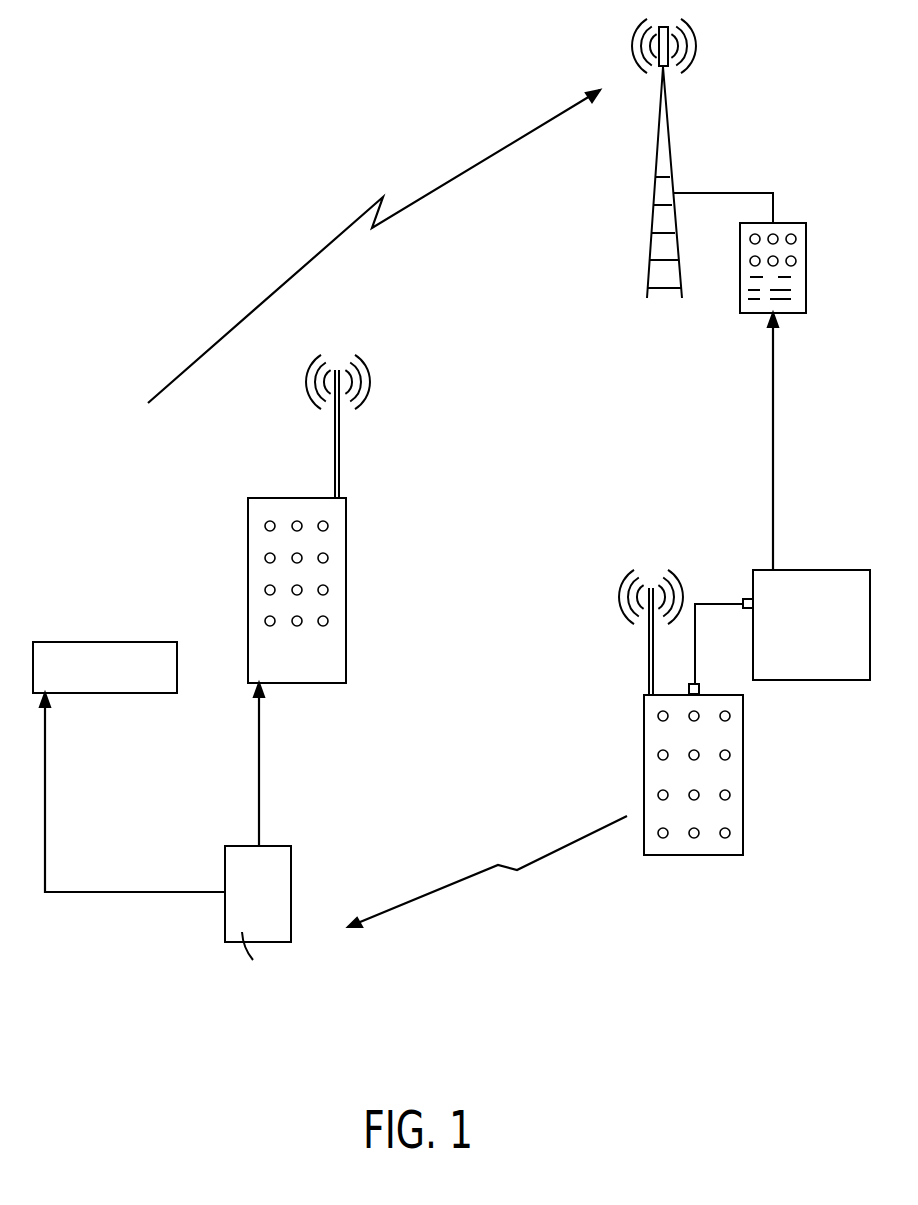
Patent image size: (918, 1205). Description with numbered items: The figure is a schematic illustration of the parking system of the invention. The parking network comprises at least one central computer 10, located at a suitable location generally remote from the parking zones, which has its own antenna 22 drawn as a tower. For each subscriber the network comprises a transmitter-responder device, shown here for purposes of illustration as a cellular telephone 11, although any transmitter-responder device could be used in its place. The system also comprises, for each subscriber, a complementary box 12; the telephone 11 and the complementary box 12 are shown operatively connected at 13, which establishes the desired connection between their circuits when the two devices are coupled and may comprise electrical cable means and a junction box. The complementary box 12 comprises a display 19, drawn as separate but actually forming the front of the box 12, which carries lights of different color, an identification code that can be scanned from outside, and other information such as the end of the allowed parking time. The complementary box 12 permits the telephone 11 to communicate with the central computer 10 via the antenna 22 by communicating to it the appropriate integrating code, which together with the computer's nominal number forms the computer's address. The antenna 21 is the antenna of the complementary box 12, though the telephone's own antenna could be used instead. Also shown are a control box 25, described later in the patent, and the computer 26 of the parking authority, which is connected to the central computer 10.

The central computer 10 is at (807, 280).
The cellular telephone 11 is at (346, 662).
The complementary box 12 is at (291, 890).
The operative connection 13 is at (259, 803).
The display 19 is at (110, 642).
The antenna of the complementary box 21 is at (340, 455).
The antenna of the central computer 22 is at (672, 147).
The control box 25 is at (743, 837).
The computer of the PA 26 is at (817, 680).